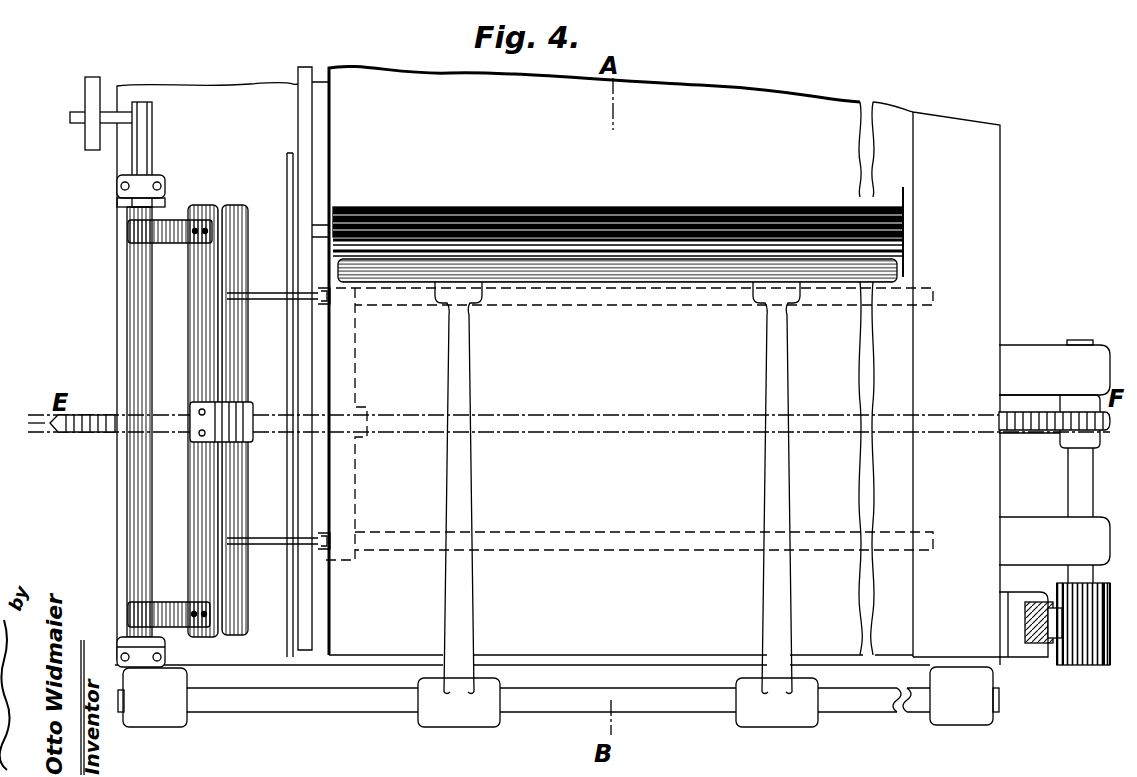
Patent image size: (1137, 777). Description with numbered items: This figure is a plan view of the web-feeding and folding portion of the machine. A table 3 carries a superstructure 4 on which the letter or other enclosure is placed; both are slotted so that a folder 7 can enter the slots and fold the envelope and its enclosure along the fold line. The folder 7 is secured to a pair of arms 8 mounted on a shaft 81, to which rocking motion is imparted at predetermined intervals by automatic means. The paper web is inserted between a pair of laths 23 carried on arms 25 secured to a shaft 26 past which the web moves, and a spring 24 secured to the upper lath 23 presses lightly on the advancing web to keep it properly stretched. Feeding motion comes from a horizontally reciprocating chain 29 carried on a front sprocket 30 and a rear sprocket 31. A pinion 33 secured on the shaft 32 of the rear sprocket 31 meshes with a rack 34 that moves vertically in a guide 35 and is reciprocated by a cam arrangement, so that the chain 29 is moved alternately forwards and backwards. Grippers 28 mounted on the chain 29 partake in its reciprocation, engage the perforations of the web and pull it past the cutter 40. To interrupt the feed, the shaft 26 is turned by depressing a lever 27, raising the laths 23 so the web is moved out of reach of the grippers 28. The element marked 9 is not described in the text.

The table 3 is at (967, 283).
The superstructure 4 is at (847, 348).
The folder 7 is at (693, 270).
The arms 8 is at (463, 493).
The shaft 81 is at (860, 712).
The upper roller 9 is at (808, 220).
The laths 23 is at (202, 205).
The spring 24 is at (253, 405).
The arms 25 is at (172, 235).
The shaft 26 is at (153, 117).
The lever 27 is at (78, 124).
The grippers 28 is at (260, 297).
The chain 29 is at (598, 415).
The sprocket 30 is at (78, 415).
The rear sprocket 31 is at (1068, 417).
The shaft 32 is at (1073, 473).
The pinion 33 is at (1087, 663).
The rack 34 is at (1045, 640).
The guide 35 is at (1023, 650).
The cutter 40 is at (293, 628).